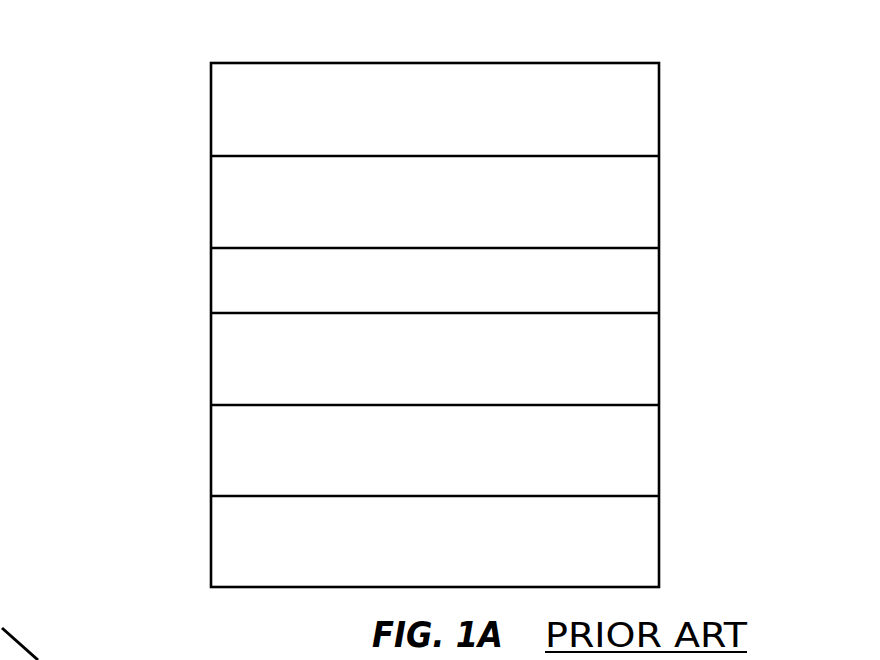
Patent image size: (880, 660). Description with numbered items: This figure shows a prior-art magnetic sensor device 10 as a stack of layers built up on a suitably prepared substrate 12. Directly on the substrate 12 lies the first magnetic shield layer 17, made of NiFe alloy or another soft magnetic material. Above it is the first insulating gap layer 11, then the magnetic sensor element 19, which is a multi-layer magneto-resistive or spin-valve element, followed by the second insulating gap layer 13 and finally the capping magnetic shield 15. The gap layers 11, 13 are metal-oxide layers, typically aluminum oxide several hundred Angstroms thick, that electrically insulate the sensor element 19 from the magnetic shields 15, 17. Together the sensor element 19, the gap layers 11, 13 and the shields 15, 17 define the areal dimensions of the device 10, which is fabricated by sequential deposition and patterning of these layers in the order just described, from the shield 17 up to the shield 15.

The magnetic sensor device 10 is at (80, 74).
The magnetic shield 15 is at (210, 123).
The second gap layer 13 is at (211, 203).
The magnetic sensor element 19 is at (211, 282).
The first gap layer 11 is at (211, 357).
The magnetic shield layer 17 is at (211, 450).
The substrate 12 is at (211, 543).